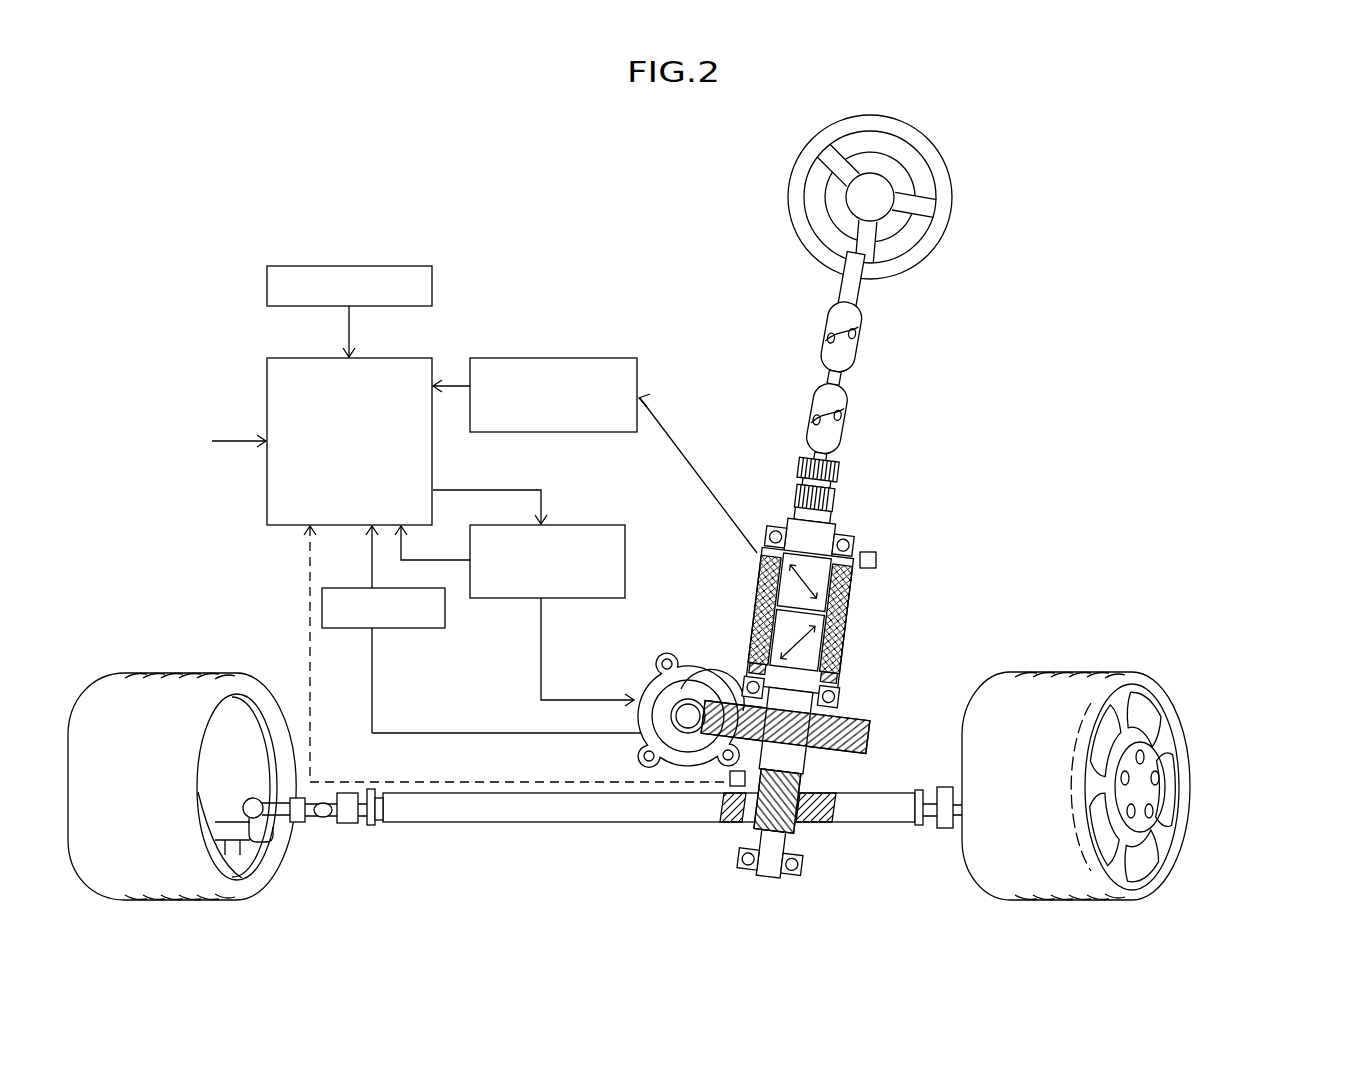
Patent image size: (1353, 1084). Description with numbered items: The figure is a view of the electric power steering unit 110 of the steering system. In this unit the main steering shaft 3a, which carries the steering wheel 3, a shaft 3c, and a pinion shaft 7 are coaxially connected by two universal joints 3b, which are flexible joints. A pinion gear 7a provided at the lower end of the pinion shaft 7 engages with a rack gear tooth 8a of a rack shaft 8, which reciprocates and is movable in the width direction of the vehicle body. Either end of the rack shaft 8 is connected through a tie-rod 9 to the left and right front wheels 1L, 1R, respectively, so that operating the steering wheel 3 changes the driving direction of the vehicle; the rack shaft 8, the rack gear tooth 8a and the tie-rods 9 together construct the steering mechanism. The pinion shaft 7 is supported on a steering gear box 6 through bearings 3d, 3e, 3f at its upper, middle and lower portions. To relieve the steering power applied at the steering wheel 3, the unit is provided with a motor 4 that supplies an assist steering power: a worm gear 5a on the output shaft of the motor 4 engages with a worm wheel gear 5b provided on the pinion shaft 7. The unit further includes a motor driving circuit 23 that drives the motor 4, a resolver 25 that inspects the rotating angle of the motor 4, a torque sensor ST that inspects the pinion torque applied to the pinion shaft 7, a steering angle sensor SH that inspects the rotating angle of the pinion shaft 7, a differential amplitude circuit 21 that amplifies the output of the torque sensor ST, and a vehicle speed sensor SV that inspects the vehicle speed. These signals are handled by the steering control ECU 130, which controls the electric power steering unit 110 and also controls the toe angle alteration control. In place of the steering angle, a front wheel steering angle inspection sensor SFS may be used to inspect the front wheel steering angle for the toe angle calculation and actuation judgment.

The electric power steering unit 110 is at (1157, 125).
The steering wheel 3 is at (957, 207).
The main steering shaft 3a is at (867, 288).
The universal joint 3b is at (868, 350).
The shaft 3c is at (848, 380).
The bearing 3d is at (840, 540).
The bearing 3e is at (838, 700).
The bearing 3f is at (795, 870).
The motor 4 is at (642, 680).
The worm gear 5a is at (710, 682).
The worm wheel gear 5b is at (865, 722).
The steering gear box 6 is at (775, 887).
The pinion shaft 7 is at (800, 762).
The pinion gear 7a is at (783, 803).
The rack shaft 8 is at (412, 823).
The rack gear tooth 8a is at (738, 822).
The tie-rod 9 is at (296, 822).
The front wheel 1L is at (1167, 695).
The front wheel 1R is at (140, 672).
The differential amplitude circuit 21 is at (607, 358).
The motor driving circuit 23 is at (607, 526).
The resolver 25 is at (425, 629).
The steering control ECU 130 is at (267, 380).
The steering angle sensor SH is at (877, 560).
The torque sensor ST is at (864, 613).
The front wheel steering angle inspection sensor SFS is at (730, 786).
The vehicle speed sensor SV is at (394, 266).